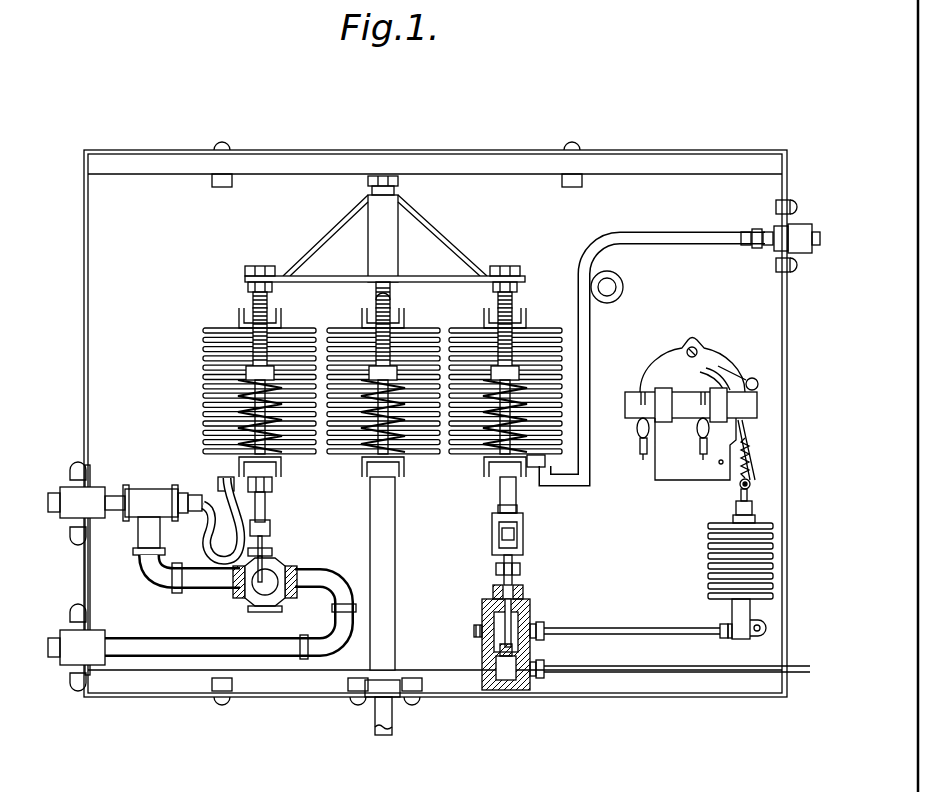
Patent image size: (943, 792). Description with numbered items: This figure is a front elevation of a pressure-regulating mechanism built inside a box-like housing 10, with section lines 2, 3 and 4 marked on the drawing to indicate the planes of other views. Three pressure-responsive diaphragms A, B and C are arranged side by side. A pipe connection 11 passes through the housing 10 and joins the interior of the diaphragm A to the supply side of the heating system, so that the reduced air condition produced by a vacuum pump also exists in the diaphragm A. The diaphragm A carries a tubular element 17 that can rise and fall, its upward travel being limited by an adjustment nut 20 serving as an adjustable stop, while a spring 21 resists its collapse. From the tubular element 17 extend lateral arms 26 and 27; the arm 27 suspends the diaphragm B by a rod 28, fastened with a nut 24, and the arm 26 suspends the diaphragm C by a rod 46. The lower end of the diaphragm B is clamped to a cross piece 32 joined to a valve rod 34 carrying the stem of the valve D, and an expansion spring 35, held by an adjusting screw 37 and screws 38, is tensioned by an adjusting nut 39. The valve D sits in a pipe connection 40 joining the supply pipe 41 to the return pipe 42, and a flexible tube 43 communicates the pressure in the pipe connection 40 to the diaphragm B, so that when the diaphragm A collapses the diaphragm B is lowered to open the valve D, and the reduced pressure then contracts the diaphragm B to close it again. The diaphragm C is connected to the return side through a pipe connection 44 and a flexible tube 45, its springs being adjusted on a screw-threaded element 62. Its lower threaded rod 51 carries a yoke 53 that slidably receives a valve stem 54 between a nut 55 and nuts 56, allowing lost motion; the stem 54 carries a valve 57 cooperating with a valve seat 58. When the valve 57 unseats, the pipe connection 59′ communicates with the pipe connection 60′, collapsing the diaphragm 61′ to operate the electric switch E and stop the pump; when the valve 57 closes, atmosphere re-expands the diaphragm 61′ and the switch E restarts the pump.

The section line 2- 2 is at (400, 122).
The section line 3- 3 is at (280, 112).
The section line 4- 4 is at (496, 112).
The box-like housing 10 is at (658, 150).
The pipe connection 11 is at (370, 548).
The tubular element 17 is at (396, 300).
The adjustment nut 20 is at (400, 187).
The spring 21 is at (370, 440).
The nut 24 is at (246, 273).
The lateral arm 26 is at (466, 283).
The lateral arm 27 is at (385, 240).
The rod 28 is at (260, 264).
The cross piece 32 is at (276, 466).
The valve rod 34 is at (267, 509).
The expansion spring 35 is at (245, 380).
The adjusting screw 37 is at (364, 299).
The screw 38 is at (268, 480).
The adjusting nut 39 is at (220, 392).
The pipe connection 40 is at (218, 588).
The pipe 41 is at (58, 520).
The pipe 42 is at (62, 630).
The flexible tube 43 is at (222, 483).
The pipe connection 44 is at (815, 226).
The flexible tube 45 is at (624, 286).
The rod 46 is at (513, 268).
The threaded rod 51 is at (500, 491).
The yoke 53 is at (486, 530).
The valve stem 54 is at (494, 420).
The nut 55 is at (500, 541).
The nut 56 is at (496, 569).
The valve 57 is at (535, 624).
The valve seat 58 is at (484, 637).
The pipe connection 59′ is at (634, 665).
The pipe connection 60′ is at (618, 618).
The diaphragm 61′ is at (710, 535).
The screw-threaded element 62 is at (480, 627).
The diaphragm A is at (380, 394).
The diaphragm B is at (237, 389).
The diaphragm C is at (537, 328).
The valve D is at (270, 566).
The electric switch E is at (658, 470).